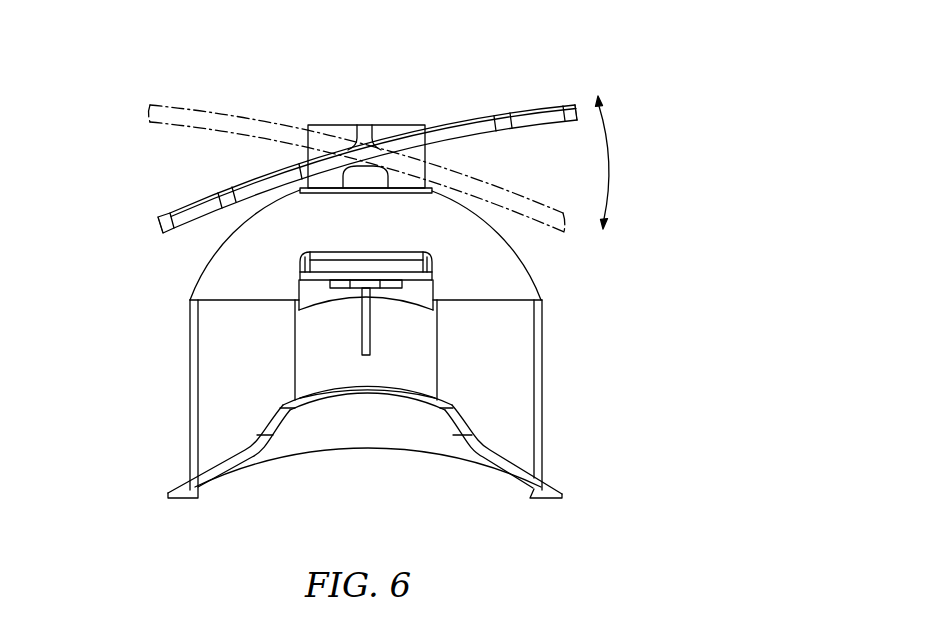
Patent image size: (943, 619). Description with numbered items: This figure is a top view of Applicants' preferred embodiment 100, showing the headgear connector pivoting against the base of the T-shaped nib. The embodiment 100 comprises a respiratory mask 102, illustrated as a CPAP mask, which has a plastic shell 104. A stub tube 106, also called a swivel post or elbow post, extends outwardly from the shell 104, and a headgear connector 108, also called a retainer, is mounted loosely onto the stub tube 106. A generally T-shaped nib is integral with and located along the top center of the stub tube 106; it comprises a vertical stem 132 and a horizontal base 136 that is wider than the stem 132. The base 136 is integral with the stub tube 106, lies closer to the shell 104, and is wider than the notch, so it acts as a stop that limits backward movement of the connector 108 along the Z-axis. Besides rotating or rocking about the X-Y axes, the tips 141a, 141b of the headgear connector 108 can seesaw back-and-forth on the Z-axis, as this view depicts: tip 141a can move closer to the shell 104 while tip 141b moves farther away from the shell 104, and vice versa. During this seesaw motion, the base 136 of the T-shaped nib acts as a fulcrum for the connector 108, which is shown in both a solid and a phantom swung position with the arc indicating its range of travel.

The preferred embodiment 100 is at (626, 84).
The respiratory mask 102 is at (240, 375).
The plastic shell 104 is at (230, 267).
The stub tube 106 is at (332, 125).
The headgear connector 108 is at (177, 207).
The stem 132 is at (387, 128).
The base 136 is at (367, 182).
The tip 141a is at (146, 233).
The tip 141b is at (576, 97).